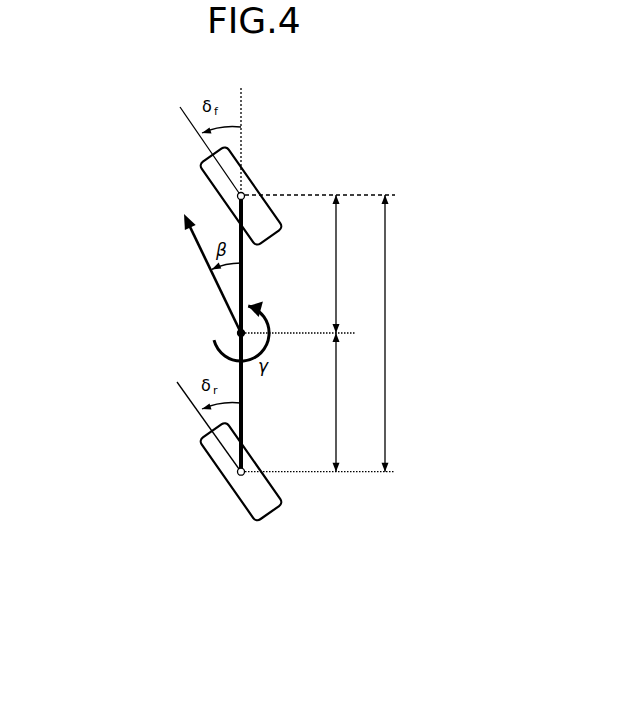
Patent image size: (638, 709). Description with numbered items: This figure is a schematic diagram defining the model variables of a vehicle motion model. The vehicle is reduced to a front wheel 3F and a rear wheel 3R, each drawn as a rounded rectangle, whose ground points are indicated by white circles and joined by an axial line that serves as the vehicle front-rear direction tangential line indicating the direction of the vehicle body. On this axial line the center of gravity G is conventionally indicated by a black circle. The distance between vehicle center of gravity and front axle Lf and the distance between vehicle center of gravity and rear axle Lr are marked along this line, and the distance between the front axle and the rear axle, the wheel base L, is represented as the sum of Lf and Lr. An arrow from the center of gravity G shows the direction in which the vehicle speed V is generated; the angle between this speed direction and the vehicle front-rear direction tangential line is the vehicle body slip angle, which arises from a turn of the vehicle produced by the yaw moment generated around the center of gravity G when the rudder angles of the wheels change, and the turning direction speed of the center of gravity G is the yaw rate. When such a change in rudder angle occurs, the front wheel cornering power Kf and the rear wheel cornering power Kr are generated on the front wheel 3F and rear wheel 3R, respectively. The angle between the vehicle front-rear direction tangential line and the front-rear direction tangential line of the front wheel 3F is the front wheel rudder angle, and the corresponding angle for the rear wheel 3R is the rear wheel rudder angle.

The front wheel 3F is at (198, 181).
The rear wheel 3R is at (238, 503).
The front wheel cornering power Kf is at (258, 181).
The rear wheel cornering power Kr is at (257, 458).
The center of gravity G is at (226, 332).
The vehicle speed V is at (206, 267).
The distance between vehicle center of gravity and front axle Lf is at (347, 264).
The distance between vehicle center of gravity and rear axle Lr is at (347, 402).
The wheel base L is at (392, 333).